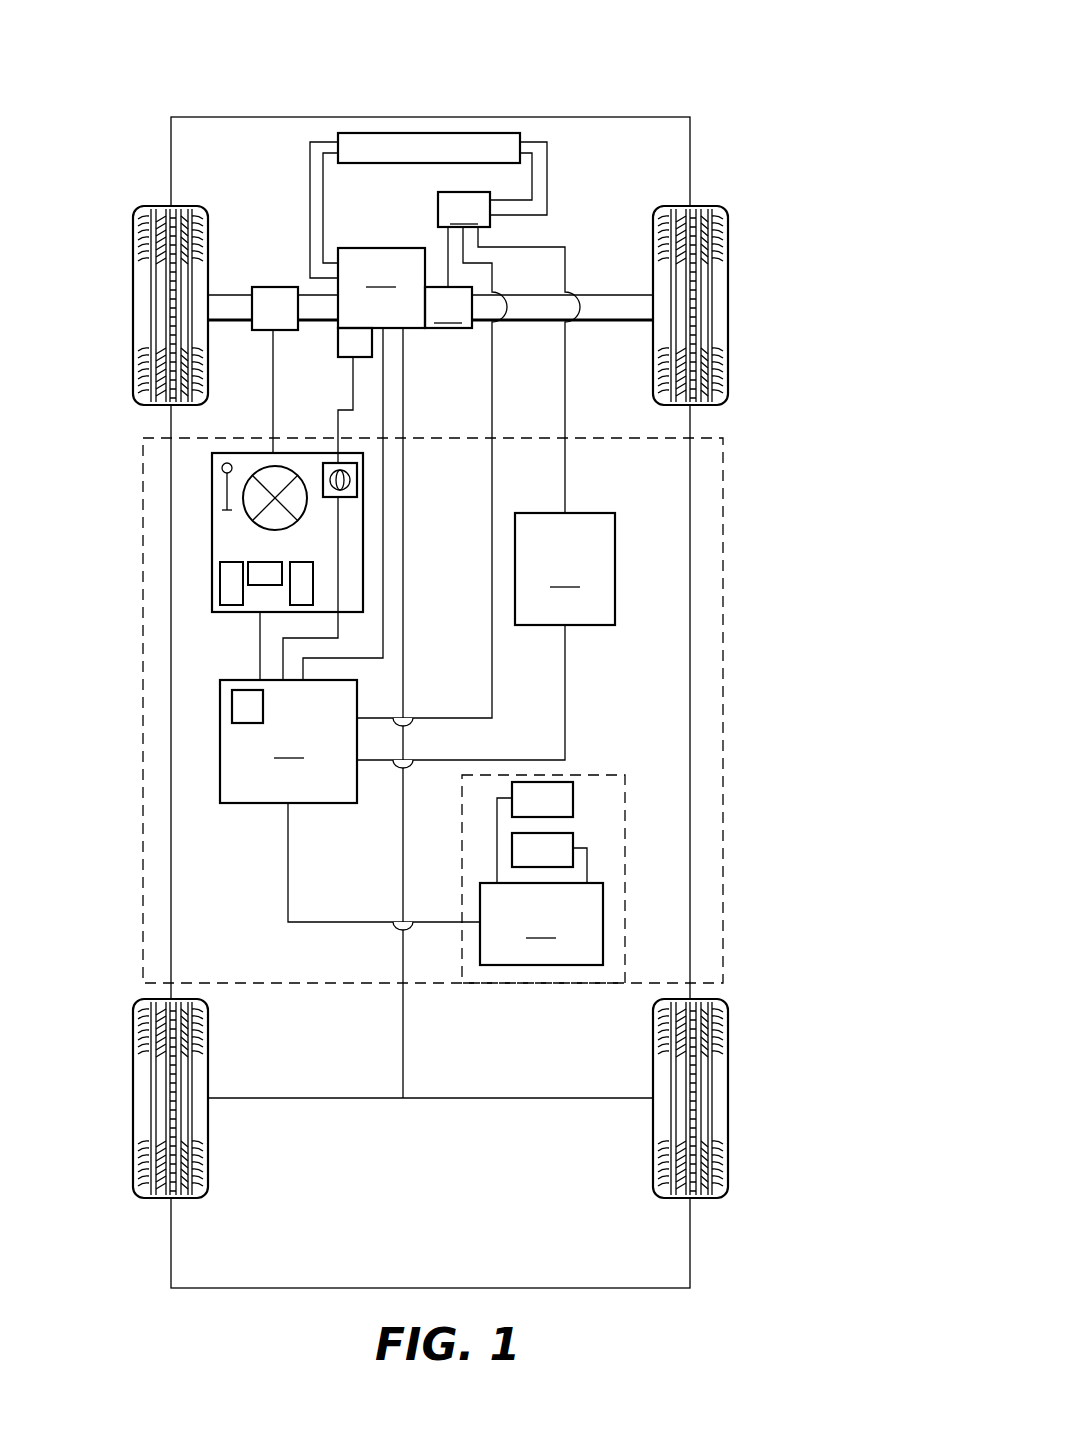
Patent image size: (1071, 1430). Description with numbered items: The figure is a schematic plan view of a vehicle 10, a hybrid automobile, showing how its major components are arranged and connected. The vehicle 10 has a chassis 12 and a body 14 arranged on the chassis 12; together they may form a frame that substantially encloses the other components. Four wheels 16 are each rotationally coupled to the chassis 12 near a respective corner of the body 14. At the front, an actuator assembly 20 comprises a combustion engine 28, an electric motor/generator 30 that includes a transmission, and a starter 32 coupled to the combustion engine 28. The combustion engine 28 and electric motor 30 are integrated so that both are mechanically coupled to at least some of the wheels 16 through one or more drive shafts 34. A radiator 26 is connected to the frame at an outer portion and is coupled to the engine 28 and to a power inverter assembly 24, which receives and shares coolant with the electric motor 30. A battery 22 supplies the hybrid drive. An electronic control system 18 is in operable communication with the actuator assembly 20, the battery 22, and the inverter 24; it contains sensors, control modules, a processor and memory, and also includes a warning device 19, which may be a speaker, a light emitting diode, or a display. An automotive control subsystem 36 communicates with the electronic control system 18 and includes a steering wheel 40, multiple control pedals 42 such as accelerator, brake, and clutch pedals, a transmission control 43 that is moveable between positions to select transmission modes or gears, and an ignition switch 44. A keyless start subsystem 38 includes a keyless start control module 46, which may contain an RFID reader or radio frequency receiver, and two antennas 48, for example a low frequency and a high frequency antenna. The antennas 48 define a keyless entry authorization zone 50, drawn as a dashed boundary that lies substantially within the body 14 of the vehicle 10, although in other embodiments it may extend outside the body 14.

The vehicle 10 is at (712, 36).
The chassis 12 is at (403, 1068).
The body 14 is at (171, 915).
The wheels 16 is at (133, 272).
The electronic control system 18 is at (350, 805).
The warning device 19 is at (232, 705).
The actuator assembly 20 is at (414, 343).
The battery 22 is at (486, 636).
The power inverter assembly 24 is at (468, 455).
The radiator 26 is at (377, 132).
The combustion engine 28 is at (381, 288).
The electric motor/generator 30 is at (448, 307).
The starter 32 is at (338, 338).
The drive shafts 34 is at (225, 292).
The automotive control subsystem 36 is at (208, 475).
The keyless start subsystem 38 is at (625, 885).
The steering mechanism 40 is at (262, 470).
The control pedals 42 is at (217, 595).
The transmission control 43 is at (220, 498).
The ignition switch 44 is at (330, 463).
The keyless start control module 46 is at (541, 924).
The antennas 48 is at (573, 797).
The keyless entry authorization zone 50 is at (727, 693).